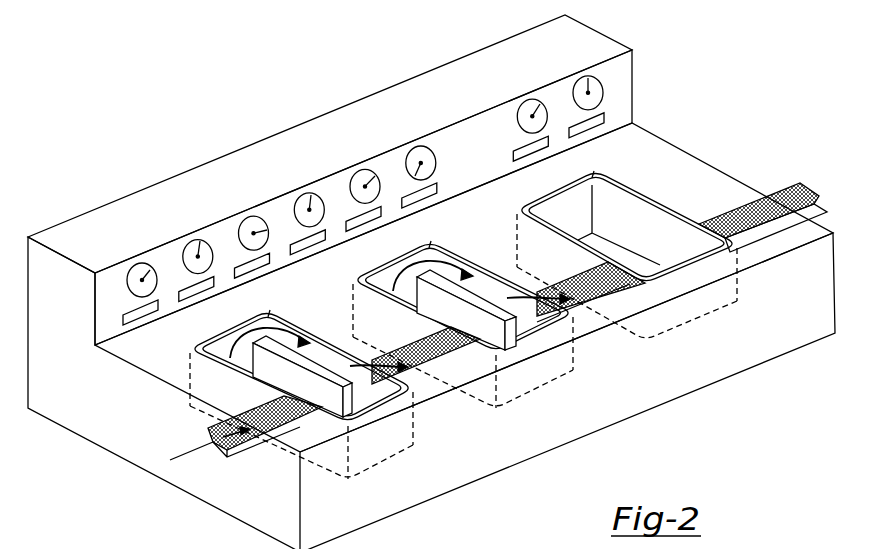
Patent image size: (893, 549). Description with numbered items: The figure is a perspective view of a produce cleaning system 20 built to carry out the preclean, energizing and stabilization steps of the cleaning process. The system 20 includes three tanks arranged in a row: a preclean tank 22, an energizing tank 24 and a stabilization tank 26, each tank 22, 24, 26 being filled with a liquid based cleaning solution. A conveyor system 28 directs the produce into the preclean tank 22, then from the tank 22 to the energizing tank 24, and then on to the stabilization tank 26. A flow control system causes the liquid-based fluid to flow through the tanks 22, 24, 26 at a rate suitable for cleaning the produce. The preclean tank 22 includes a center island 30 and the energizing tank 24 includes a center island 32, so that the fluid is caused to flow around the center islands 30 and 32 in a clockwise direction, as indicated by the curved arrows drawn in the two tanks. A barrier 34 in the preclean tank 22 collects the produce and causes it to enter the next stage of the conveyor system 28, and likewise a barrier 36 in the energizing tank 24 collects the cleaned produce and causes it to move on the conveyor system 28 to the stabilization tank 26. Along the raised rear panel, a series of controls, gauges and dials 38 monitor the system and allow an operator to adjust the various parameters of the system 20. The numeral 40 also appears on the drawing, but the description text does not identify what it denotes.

The produce cleaning system 20 is at (248, 110).
The preclean tank 22 is at (375, 447).
The energizing tank 24 is at (535, 382).
The stabilization tank 26 is at (690, 320).
The conveyor system 28 is at (247, 453).
The center island 30 is at (310, 368).
The center island 32 is at (473, 300).
The barrier 34 is at (383, 385).
The barrier 36 is at (546, 300).
The controls, gauges and dials 38 is at (293, 148).
The cabinet housing 40 is at (567, 391).